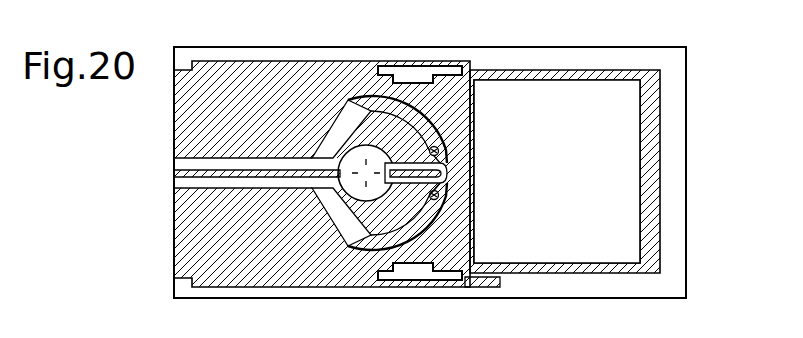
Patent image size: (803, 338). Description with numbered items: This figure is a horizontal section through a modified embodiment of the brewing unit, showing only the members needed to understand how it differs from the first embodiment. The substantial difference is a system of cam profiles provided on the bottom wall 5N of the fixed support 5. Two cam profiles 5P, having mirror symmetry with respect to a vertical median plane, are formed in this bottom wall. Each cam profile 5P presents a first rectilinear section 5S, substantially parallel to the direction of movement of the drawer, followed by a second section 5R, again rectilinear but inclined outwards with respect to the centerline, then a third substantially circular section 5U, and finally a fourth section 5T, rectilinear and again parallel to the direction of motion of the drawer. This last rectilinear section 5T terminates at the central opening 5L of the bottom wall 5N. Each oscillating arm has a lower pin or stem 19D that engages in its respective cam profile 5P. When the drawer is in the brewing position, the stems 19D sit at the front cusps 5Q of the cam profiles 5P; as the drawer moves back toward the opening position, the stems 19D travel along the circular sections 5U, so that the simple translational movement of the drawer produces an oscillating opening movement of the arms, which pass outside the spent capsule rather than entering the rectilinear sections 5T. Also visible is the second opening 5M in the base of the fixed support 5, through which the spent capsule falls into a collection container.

The fixed support 5 is at (702, 92).
The bottom wall 5N is at (264, 276).
The cam profiles 5P is at (200, 158).
The first rectilinear section 5S is at (262, 165).
The second section 5R is at (353, 118).
The third substantially circular section 5U is at (413, 118).
The central opening 5L is at (348, 152).
The front cusps 5Q is at (446, 178).
The lower pin or stem 19D is at (440, 148).
The fourth section 5T is at (420, 206).
The second opening 5M is at (598, 185).